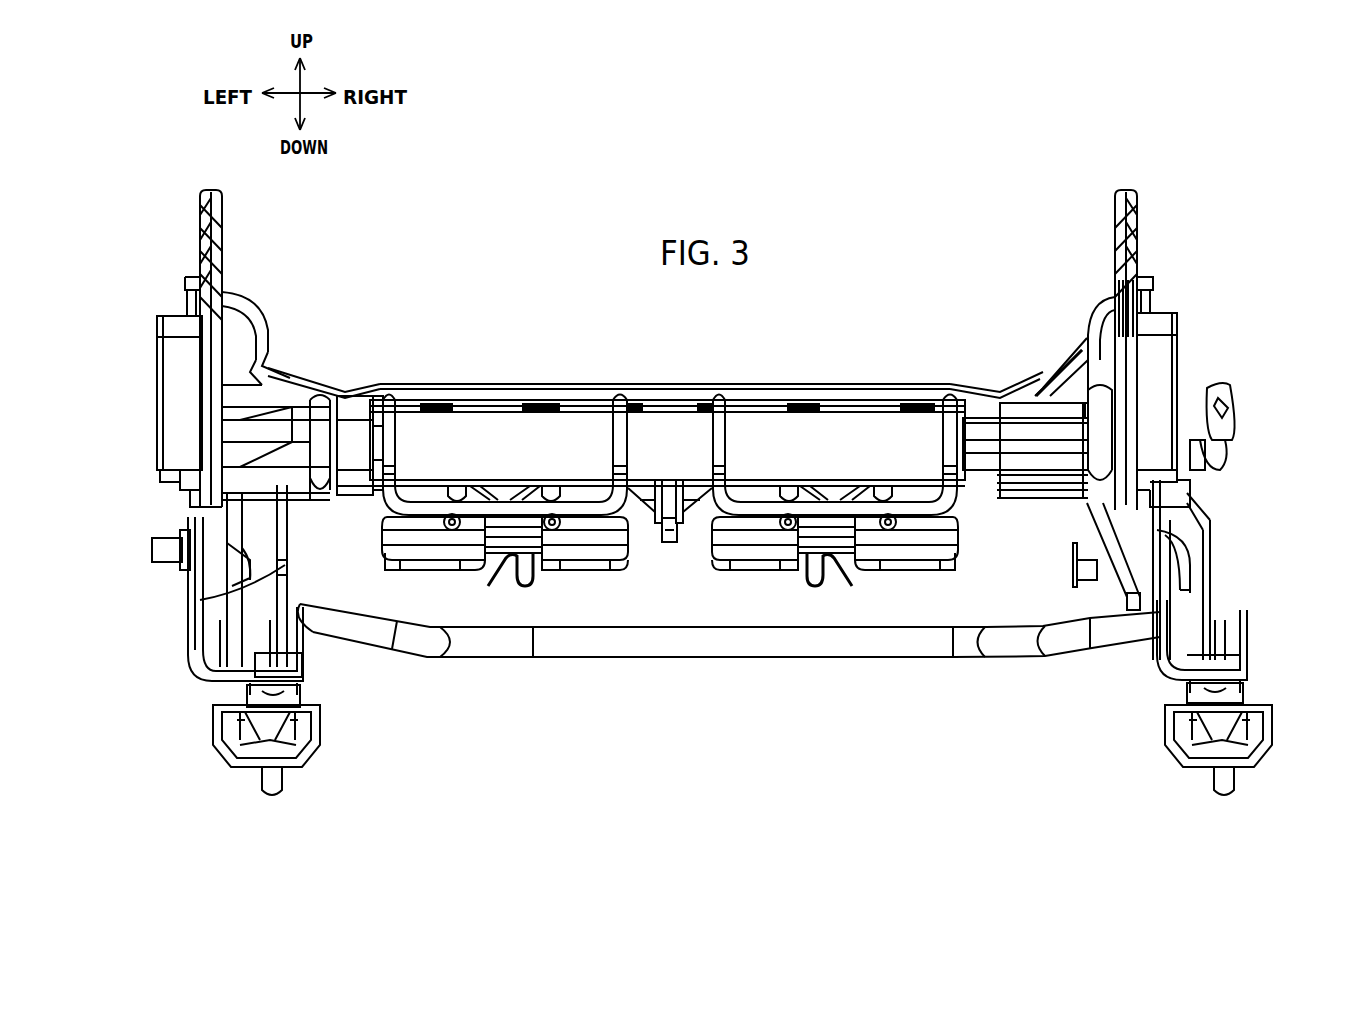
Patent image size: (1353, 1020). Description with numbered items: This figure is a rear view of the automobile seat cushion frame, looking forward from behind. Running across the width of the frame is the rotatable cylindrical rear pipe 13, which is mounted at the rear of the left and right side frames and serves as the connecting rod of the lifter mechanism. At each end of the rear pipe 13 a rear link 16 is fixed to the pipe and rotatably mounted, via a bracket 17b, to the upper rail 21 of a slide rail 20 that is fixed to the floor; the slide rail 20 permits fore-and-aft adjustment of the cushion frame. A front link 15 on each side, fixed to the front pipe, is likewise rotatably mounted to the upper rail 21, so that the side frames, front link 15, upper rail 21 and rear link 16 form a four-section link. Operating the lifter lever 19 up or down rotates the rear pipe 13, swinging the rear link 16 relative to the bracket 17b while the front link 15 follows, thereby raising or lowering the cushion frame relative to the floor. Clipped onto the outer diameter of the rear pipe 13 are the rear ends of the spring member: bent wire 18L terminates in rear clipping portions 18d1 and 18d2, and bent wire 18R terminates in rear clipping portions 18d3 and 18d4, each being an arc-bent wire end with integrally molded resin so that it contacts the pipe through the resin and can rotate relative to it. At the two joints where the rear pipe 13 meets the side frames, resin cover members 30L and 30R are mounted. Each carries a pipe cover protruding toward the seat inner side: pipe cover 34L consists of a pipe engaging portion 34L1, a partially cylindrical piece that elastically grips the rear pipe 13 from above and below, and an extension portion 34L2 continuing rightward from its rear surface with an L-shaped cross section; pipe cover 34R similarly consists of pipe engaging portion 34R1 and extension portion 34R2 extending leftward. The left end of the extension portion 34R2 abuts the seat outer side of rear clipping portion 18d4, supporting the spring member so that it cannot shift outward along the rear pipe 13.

The rear pipe 13 is at (567, 440).
The front link 15 is at (205, 545).
The rear link 16 is at (190, 601).
The bracket 17b is at (190, 640).
The bent wire 18L is at (515, 418).
The bent wire 18R is at (826, 416).
The rear clipping portion 18d1 is at (393, 392).
The rear clipping portion 18d2 is at (616, 396).
The rear clipping portion 18d3 is at (714, 396).
The rear clipping portion 18d4 is at (950, 394).
The lifter lever 19 is at (1224, 386).
The slide rail 20 is at (322, 737).
The upper rail 21 is at (243, 688).
The cover member 30L is at (247, 304).
The cover member 30R is at (1098, 303).
The pipe cover 34L is at (363, 360).
The pipe engaging portion 34L1 is at (347, 410).
The extension portion 34L2 is at (378, 400).
The pipe cover 34R is at (1015, 351).
The pipe engaging portion 34R1 is at (1020, 410).
The extension portion 34R2 is at (980, 412).